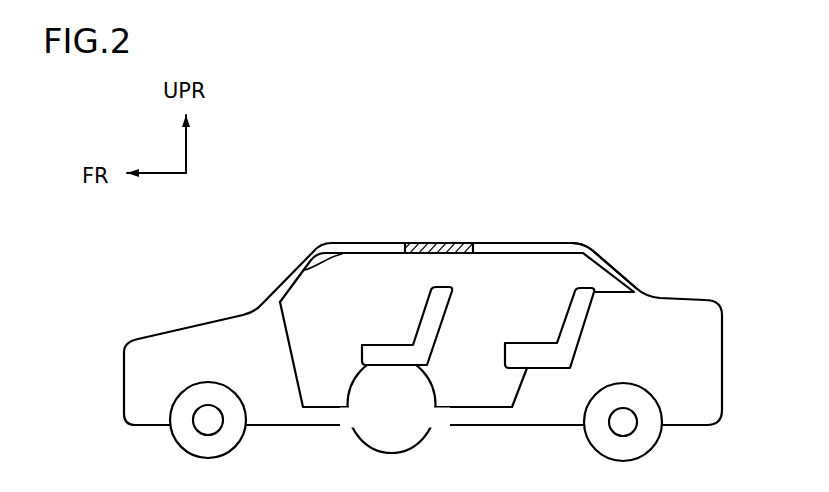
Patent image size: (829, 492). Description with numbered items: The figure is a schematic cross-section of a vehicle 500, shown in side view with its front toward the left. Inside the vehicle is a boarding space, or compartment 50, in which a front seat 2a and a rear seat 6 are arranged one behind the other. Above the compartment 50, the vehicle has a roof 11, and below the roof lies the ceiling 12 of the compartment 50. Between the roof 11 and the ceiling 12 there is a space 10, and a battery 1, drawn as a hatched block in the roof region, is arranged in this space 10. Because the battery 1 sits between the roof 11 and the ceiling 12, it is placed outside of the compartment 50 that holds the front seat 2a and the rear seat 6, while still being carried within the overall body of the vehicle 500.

The vehicle 500 is at (197, 252).
The ceiling 12 is at (305, 270).
The roof 11 is at (343, 243).
The front seat 2a is at (393, 353).
The battery 1 is at (439, 243).
The boarding space (compartment) 50 is at (490, 285).
The rear seat 6 is at (532, 345).
The space 10 is at (573, 247).